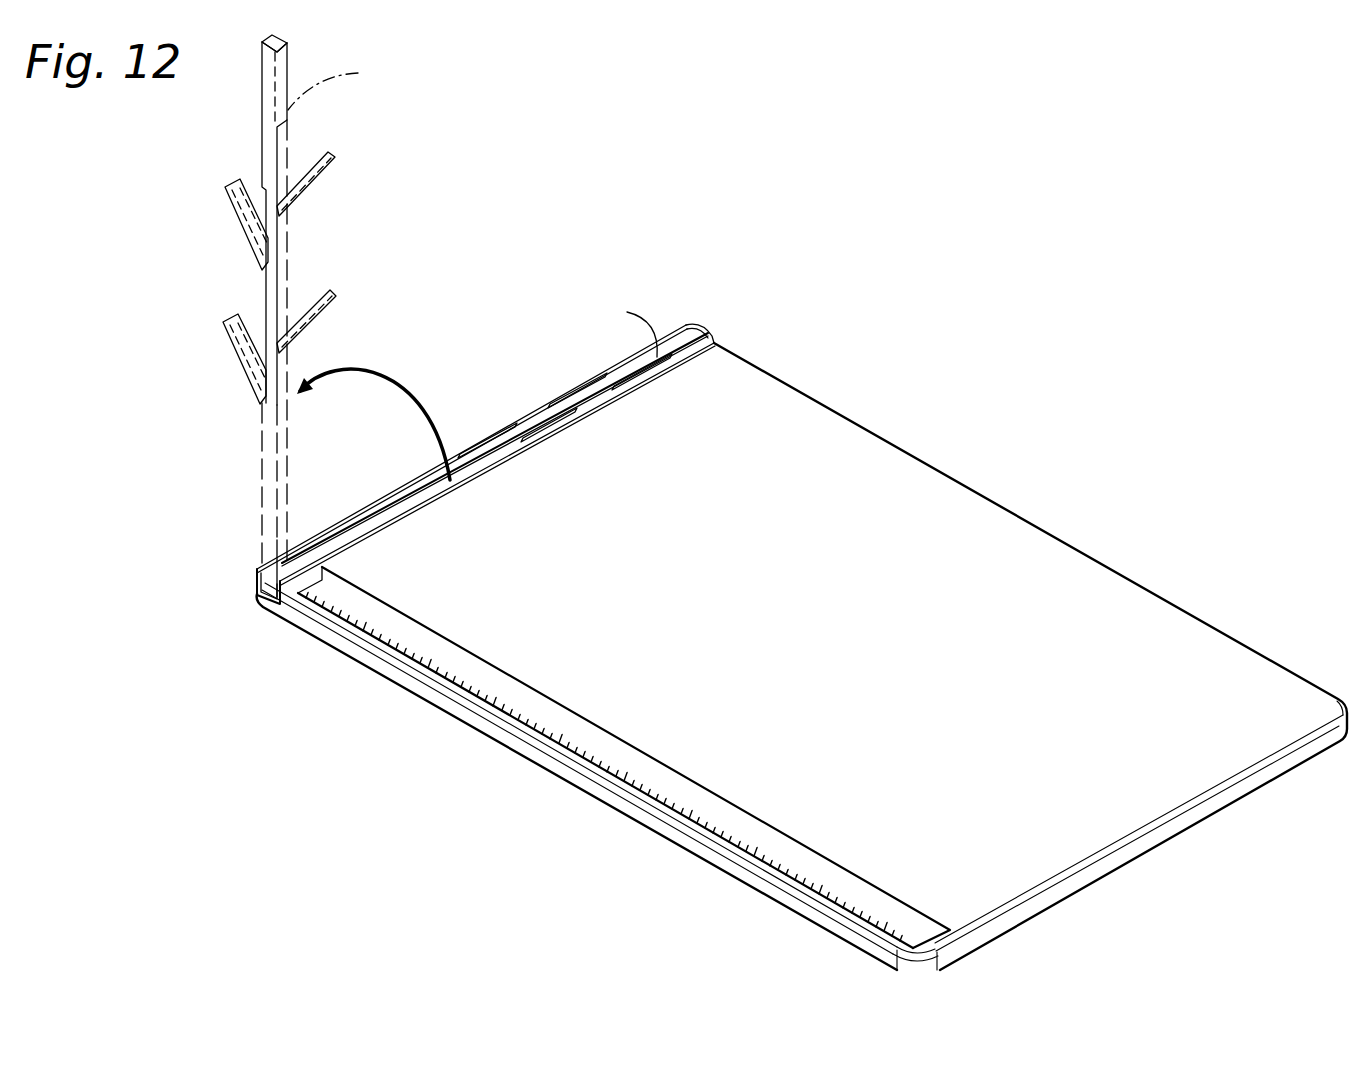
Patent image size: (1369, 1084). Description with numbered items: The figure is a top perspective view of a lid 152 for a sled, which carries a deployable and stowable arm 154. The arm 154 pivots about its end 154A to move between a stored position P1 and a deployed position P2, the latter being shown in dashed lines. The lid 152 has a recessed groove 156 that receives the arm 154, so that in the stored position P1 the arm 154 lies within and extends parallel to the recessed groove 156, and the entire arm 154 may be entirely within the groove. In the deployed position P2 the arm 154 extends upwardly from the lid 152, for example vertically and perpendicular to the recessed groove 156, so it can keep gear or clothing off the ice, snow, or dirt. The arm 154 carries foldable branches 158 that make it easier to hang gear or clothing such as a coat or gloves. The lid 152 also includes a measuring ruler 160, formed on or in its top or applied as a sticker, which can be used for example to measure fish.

The lid 152 is at (988, 472).
The deployable arm 154 is at (459, 316).
The end 154A is at (256, 594).
The recessed groove 156 is at (312, 563).
The branches 158 is at (628, 382).
The measuring ruler 160 is at (598, 742).
The stored position P1 is at (486, 442).
The deployed position P2 is at (262, 142).